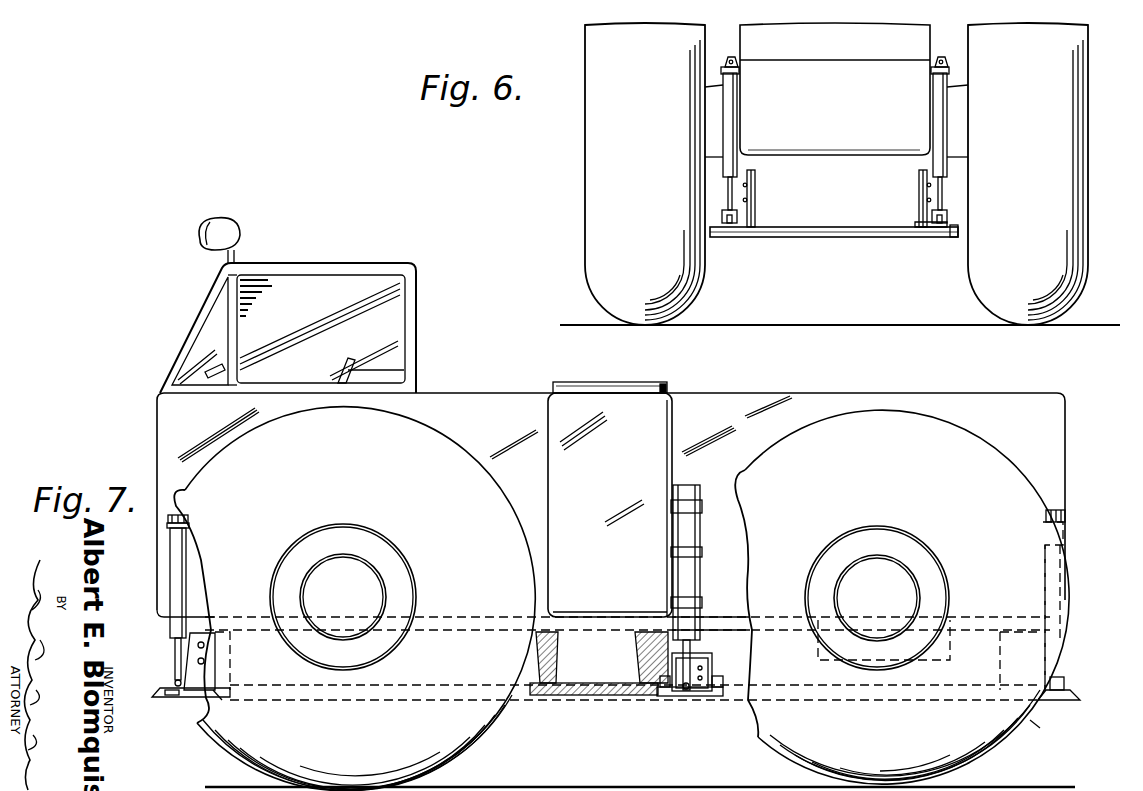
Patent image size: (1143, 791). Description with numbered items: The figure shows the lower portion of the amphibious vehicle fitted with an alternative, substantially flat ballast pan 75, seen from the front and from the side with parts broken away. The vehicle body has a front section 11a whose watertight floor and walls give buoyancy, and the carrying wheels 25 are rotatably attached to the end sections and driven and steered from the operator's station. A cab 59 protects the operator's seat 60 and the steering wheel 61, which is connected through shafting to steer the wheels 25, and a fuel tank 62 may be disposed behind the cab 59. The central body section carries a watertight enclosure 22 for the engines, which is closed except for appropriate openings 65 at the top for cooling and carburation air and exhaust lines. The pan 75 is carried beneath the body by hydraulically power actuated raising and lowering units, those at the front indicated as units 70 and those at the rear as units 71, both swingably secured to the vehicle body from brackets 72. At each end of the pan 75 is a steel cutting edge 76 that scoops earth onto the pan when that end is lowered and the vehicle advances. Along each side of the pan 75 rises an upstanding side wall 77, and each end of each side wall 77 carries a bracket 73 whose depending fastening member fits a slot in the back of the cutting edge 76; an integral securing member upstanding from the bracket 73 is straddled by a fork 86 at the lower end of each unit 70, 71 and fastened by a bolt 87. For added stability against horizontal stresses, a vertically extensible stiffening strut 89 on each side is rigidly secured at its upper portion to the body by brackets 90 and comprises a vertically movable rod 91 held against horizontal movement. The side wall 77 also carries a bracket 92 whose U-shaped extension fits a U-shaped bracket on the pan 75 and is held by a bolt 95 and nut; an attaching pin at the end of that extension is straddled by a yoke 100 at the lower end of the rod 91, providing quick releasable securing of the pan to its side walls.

In FIG. 6, the front section 11a is at (866, 72).
In FIG. 7, the enclosure 22 is at (673, 418).
In FIG. 6, the carrying wheels 25 is at (590, 134).
In FIG. 7, the carrying wheels 25 is at (458, 462).
In FIG. 7, the cab 59 is at (417, 311).
In FIG. 7, the operator's seat 60 is at (347, 366).
In FIG. 7, the steering wheel 61 is at (212, 368).
In FIG. 7, the fuel tank 62 is at (496, 404).
In FIG. 7, the openings 65 is at (650, 383).
In FIG. 6, the raising and lowering units 70 is at (737, 114).
In FIG. 7, the raising and lowering units 70 is at (172, 561).
In FIG. 7, the raising and lowering units 71 is at (1050, 572).
In FIG. 6, the brackets 72 is at (735, 50).
In FIG. 7, the brackets 72 is at (176, 514).
In FIG. 7, the bracket 73 is at (201, 703).
In FIG. 6, the pan 75 is at (828, 238).
In FIG. 7, the pan 75 is at (582, 697).
In FIG. 7, the cutting edge 76 is at (158, 694).
In FIG. 6, the side wall 77 is at (756, 189).
In FIG. 7, the side wall 77 is at (540, 690).
In FIG. 6, the fork 86 is at (932, 218).
In FIG. 6, the bolt 87 is at (955, 240).
In FIG. 7, the bolt 87 is at (190, 682).
In FIG. 7, the stiffening struts 89 is at (696, 533).
In FIG. 7, the brackets 90 is at (690, 553).
In FIG. 7, the vertically movable rod 91 is at (694, 656).
In FIG. 7, the bracket 92 is at (716, 697).
In FIG. 7, the bolt 95 is at (662, 696).
In FIG. 7, the yoke 100 is at (690, 676).